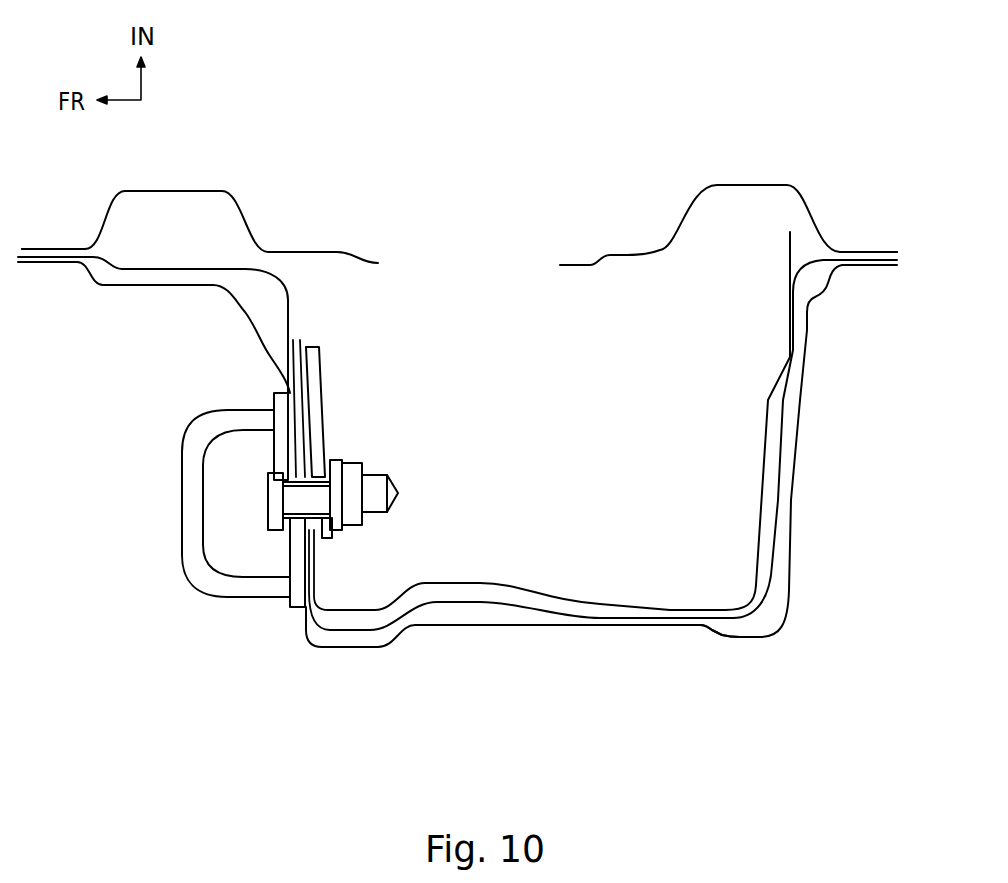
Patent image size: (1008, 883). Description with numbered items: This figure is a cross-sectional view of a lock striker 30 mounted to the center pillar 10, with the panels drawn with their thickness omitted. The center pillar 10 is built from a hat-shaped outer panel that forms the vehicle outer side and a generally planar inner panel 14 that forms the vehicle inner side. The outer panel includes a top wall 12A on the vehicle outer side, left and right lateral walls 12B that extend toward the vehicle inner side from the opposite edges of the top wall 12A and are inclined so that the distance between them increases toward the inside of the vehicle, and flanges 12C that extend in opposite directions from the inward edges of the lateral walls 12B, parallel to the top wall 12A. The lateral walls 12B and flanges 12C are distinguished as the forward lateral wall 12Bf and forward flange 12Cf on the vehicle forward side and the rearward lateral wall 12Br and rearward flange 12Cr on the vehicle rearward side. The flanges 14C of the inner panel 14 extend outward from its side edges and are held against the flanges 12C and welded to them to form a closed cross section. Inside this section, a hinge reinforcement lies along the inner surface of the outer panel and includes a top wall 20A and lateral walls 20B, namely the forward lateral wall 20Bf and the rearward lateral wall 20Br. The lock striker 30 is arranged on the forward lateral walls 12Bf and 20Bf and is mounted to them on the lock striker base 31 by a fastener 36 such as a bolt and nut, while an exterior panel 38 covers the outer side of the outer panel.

The center pillar 10 is at (314, 722).
The top wall 12A is at (504, 626).
The lateral walls 12B is at (597, 449).
The forward lateral wall 12Bf is at (307, 380).
The rearward lateral wall 12Br is at (777, 515).
The flanges 12C is at (464, 368).
The forward flange 12Cf is at (52, 263).
The rearward flange 12Cr is at (867, 268).
The inner panel 14 is at (306, 247).
The flanges 14C is at (70, 248).
The top wall 20A is at (546, 591).
The lateral walls 20B is at (540, 431).
The forward lateral wall 20Bf is at (290, 312).
The rearward lateral wall 20Br is at (762, 462).
The lock striker 30 is at (182, 510).
The lock striker base 31 is at (288, 552).
The fastener 36 is at (396, 487).
The exterior panel 38 is at (640, 628).